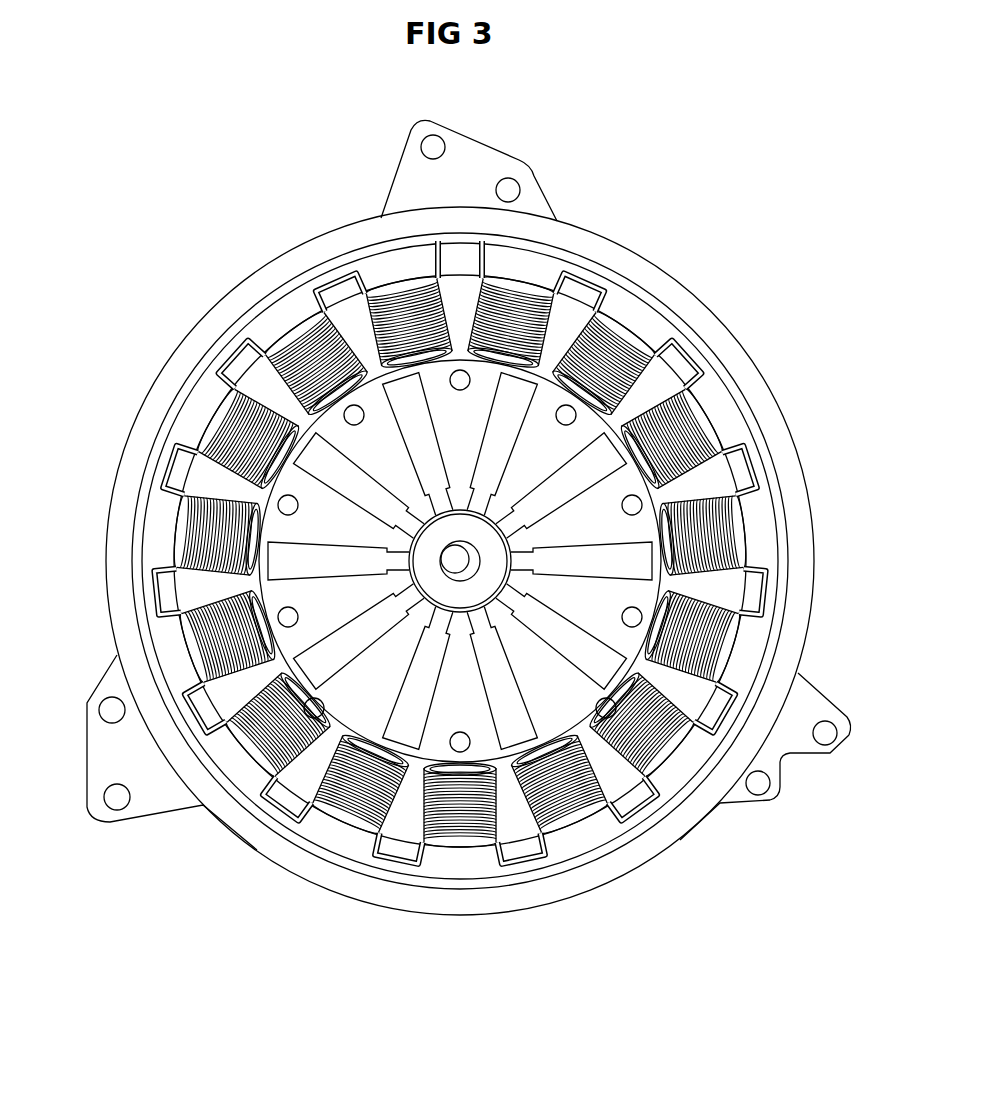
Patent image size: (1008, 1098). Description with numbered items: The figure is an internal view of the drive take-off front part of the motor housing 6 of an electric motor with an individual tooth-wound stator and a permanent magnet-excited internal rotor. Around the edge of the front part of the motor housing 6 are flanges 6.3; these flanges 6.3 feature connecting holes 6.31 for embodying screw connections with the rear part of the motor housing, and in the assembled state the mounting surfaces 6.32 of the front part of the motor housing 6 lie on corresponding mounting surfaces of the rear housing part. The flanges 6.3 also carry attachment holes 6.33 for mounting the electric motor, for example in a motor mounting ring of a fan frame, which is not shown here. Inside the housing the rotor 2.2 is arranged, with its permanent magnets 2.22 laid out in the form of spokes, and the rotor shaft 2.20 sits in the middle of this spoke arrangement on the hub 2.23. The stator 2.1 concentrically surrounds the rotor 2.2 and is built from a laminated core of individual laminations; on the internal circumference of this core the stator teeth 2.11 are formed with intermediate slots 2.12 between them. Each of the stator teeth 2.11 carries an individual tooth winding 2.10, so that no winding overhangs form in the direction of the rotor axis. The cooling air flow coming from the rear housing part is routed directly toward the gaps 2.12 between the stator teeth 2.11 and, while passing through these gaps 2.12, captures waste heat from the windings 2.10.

The stator 2.1 is at (406, 591).
The individual tooth windings 2.10 is at (320, 798).
The stator teeth 2.11 is at (186, 487).
The slots 2.12 is at (606, 768).
The rotor 2.2 is at (573, 560).
The rotor shaft 2.20 is at (453, 557).
The permanent magnets 2.22 is at (598, 452).
The hub 2.23 is at (463, 533).
The front part of the motor housing 6 is at (480, 517).
The flanges 6.3 is at (777, 748).
The connecting holes 6.31 is at (754, 796).
The mounting surfaces 6.32 is at (786, 733).
The fastening hole 6.33 is at (830, 746).